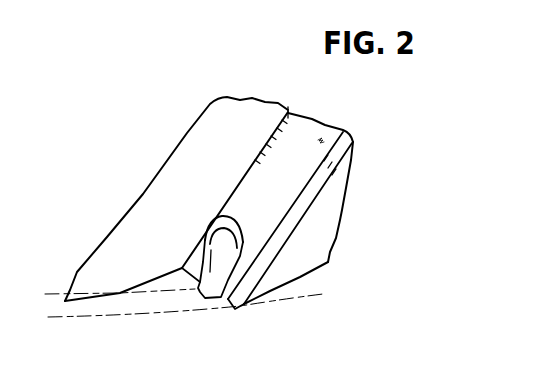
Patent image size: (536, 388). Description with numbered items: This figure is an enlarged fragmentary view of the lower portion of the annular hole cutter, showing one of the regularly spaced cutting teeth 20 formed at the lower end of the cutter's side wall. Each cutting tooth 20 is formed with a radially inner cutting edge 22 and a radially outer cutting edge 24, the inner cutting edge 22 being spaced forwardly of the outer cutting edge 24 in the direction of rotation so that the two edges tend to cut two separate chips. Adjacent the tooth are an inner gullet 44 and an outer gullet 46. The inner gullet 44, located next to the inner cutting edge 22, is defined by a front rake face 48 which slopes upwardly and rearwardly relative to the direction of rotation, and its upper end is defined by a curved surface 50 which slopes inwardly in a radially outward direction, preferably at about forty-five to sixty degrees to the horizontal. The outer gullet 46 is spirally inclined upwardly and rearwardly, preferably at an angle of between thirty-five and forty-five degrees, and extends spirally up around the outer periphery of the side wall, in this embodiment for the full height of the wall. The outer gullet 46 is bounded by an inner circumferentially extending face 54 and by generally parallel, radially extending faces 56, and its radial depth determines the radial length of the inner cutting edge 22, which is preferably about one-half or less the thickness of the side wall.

The cutting tooth 20 is at (340, 219).
The radially inner cutting edge 22 is at (200, 292).
The radially outer cutting edge 24 is at (235, 308).
The inner gullet 44 is at (233, 245).
The outer gullet 46 is at (333, 127).
The front rake face 48 is at (198, 280).
The curved surface 50 is at (232, 219).
The inner circumferentially extending face 54 is at (303, 125).
The radially extending face 56 is at (250, 283).